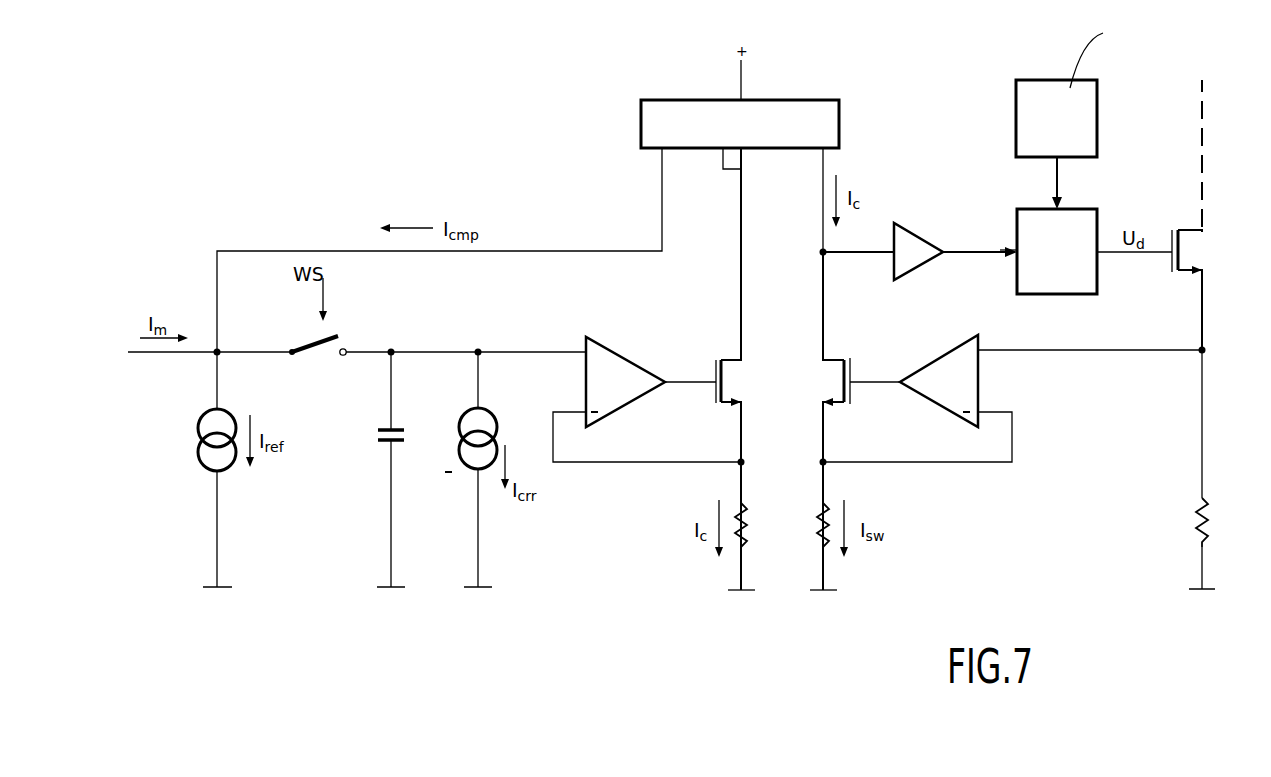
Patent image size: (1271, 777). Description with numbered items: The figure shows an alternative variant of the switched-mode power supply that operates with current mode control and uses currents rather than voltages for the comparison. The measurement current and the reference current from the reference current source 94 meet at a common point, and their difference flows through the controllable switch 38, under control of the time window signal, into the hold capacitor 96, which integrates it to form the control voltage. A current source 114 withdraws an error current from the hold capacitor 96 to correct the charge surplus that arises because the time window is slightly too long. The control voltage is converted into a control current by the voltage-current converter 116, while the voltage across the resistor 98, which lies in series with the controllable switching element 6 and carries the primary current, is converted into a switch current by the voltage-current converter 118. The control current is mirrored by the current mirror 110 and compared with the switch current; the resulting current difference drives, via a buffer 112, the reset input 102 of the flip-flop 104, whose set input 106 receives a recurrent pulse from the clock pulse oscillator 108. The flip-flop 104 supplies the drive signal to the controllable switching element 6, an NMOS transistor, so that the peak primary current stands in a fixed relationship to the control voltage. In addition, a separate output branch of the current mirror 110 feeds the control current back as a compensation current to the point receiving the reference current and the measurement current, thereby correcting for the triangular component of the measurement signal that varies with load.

The controllable switching element 6 is at (1194, 252).
The controllable switch 38 is at (338, 333).
The reference current source 94 is at (198, 431).
The hold capacitor 96 is at (376, 434).
The resistor 98 is at (1210, 533).
The reset input 102 is at (1012, 243).
The flip-flop 104 is at (1053, 295).
The set input 106 is at (1066, 206).
The clock pulse oscillator 108 is at (1012, 107).
The current mirror 110 is at (790, 98).
The buffer 112 is at (906, 232).
The current source 114 is at (490, 410).
The voltage-current converter 116 is at (677, 445).
The voltage-current converter 118 is at (899, 445).